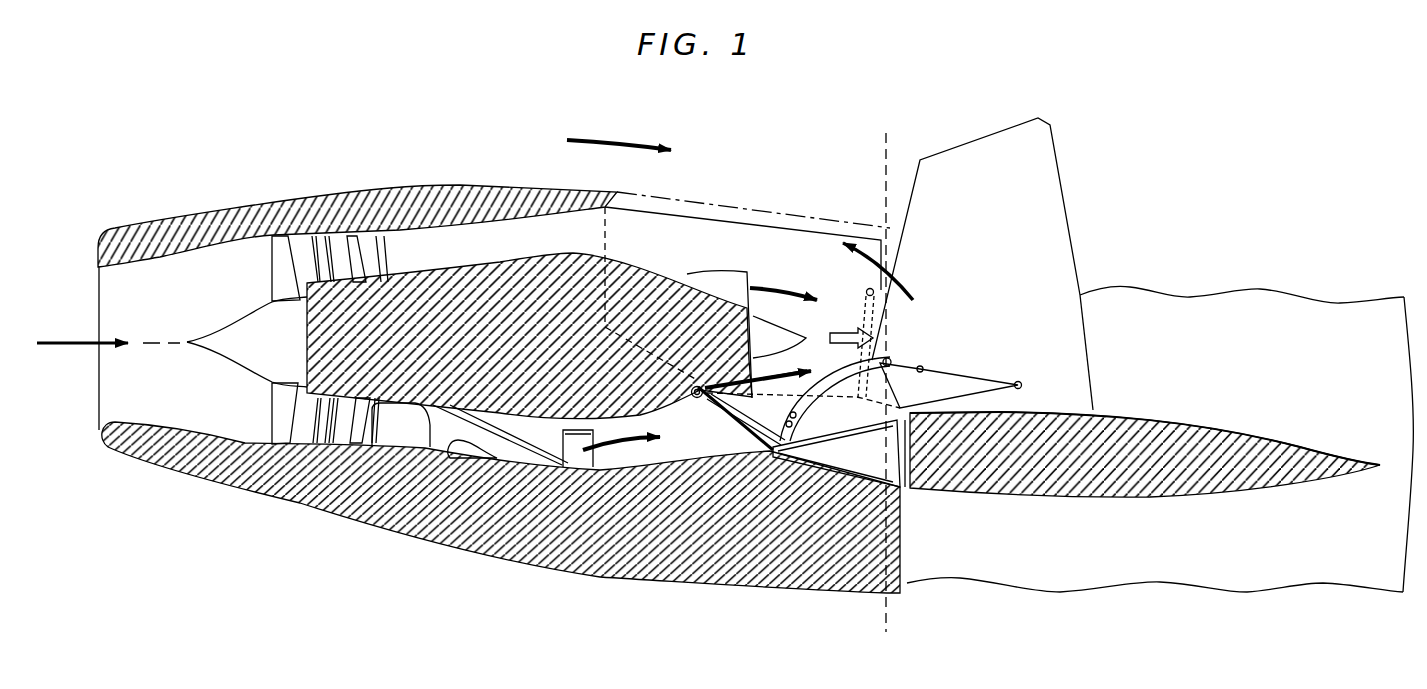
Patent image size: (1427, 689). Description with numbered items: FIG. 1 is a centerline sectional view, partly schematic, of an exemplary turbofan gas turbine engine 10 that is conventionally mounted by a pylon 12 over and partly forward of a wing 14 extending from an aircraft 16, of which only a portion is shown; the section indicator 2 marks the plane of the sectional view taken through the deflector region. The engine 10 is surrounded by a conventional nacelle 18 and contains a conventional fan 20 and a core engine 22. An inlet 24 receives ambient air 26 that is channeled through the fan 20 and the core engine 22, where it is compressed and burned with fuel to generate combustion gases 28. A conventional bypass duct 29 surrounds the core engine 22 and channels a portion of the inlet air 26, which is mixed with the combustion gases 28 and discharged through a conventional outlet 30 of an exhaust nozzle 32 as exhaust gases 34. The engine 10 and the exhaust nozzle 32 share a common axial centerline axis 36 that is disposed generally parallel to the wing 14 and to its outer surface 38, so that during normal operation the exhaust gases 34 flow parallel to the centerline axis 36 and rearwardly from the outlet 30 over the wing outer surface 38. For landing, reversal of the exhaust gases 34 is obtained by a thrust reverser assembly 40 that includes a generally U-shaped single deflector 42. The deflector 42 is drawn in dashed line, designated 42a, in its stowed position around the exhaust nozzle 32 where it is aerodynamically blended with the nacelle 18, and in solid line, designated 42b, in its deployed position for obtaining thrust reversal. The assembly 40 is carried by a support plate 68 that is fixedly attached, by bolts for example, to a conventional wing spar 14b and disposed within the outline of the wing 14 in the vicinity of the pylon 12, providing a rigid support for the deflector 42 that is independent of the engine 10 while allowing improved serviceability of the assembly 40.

The turbofan gas turbine engine 10 is at (232, 192).
The pylon 12 is at (450, 552).
The wing 14 is at (1145, 465).
The wing spar 14b is at (907, 465).
The aircraft 16 is at (1168, 287).
The nacelle 18 is at (483, 187).
The fan 20 is at (277, 258).
The core engine 22 is at (500, 260).
The inlet 24 is at (97, 267).
The ambient air 26 is at (77, 341).
The combustion gases 28 is at (788, 291).
The bypass duct 29 is at (452, 259).
The outlet 30 is at (888, 257).
The exhaust nozzle 32 is at (893, 277).
The exhaust gases 34 is at (857, 330).
The axial centerline axis 36 is at (177, 343).
The outer surface 38 is at (1193, 422).
The thrust reverser assembly 40 is at (1075, 242).
The deflector 42 is at (878, 245).
The deflector stowed position 42a is at (753, 209).
The deflector deployed position 42b is at (1058, 177).
The support plate 68 is at (716, 429).
The section line 2- 2 is at (886, 133).